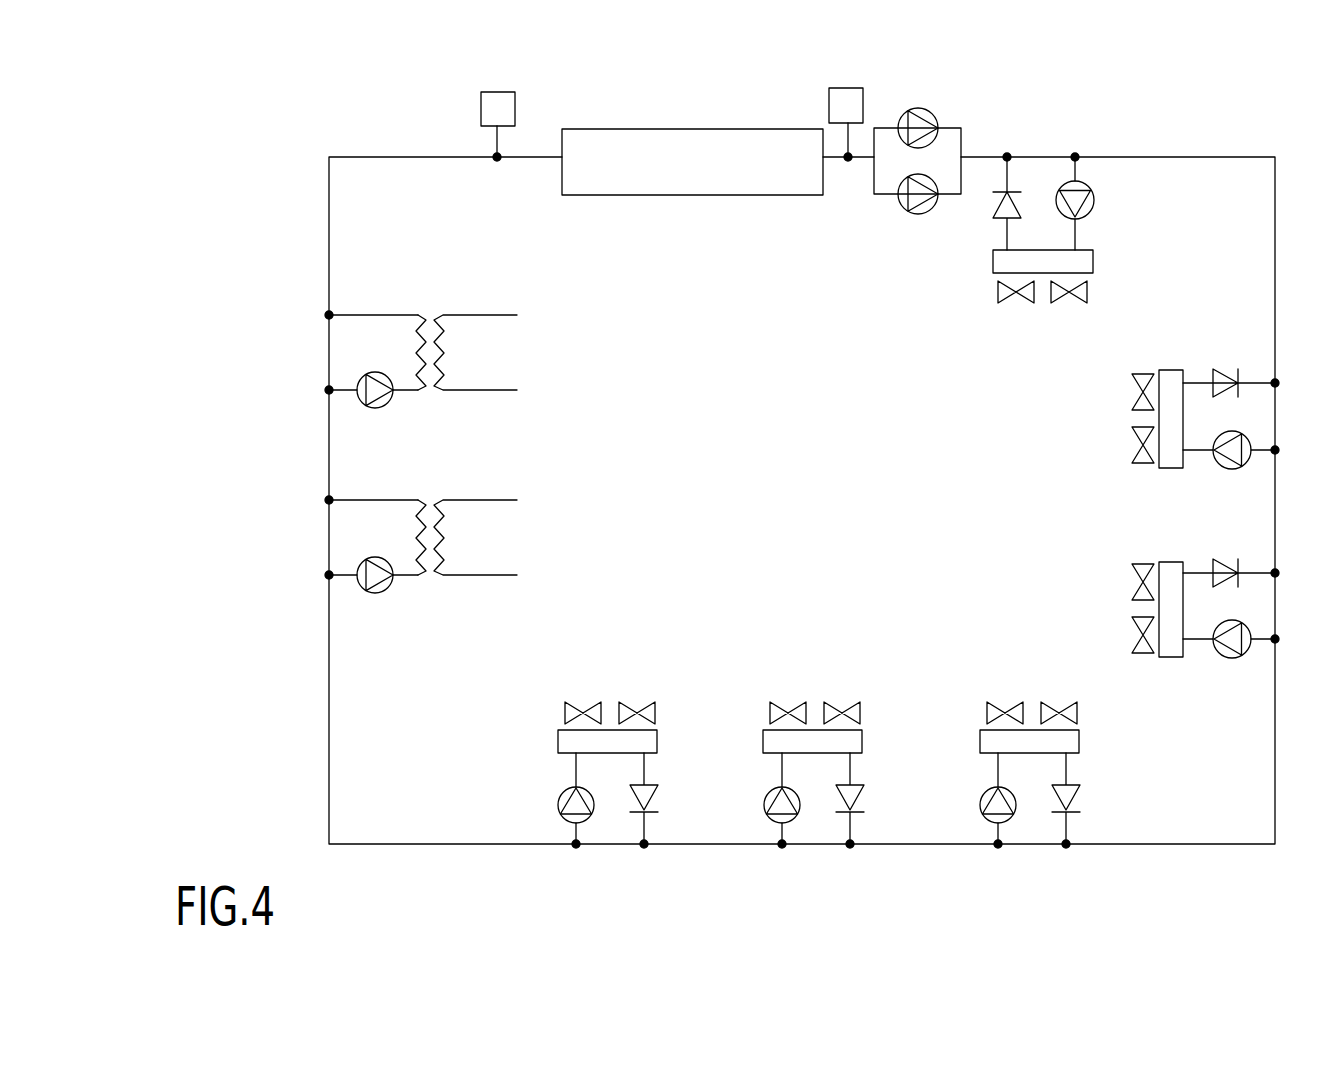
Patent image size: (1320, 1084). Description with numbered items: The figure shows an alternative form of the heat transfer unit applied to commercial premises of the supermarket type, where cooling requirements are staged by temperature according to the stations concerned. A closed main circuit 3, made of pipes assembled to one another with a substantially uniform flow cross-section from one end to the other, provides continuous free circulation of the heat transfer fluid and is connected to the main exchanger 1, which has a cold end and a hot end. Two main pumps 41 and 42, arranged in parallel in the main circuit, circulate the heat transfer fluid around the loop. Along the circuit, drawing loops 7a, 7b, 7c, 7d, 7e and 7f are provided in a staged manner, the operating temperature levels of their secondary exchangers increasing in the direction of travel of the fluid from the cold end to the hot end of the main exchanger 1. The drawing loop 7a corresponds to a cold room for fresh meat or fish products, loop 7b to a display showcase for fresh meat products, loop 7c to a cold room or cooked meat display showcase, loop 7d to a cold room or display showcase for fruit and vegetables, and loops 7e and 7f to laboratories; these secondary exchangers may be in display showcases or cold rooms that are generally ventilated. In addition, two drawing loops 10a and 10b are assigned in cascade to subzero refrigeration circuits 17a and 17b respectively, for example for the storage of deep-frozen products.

The main exchanger 1 is at (718, 172).
The closed main circuit 3 is at (1150, 157).
The main pump 41 is at (930, 112).
The main pump 42 is at (930, 207).
The drawing loop 7a is at (1037, 196).
The drawing loop 7b is at (1197, 418).
The drawing loop 7c is at (1196, 618).
The drawing loop 7d is at (1038, 805).
The drawing loop 7e is at (822, 808).
The drawing loop 7f is at (615, 812).
The drawing loop 10a is at (380, 532).
The drawing loop 10b is at (375, 335).
The subzero refrigeration circuit 17a is at (488, 545).
The subzero refrigeration circuit 17b is at (470, 352).